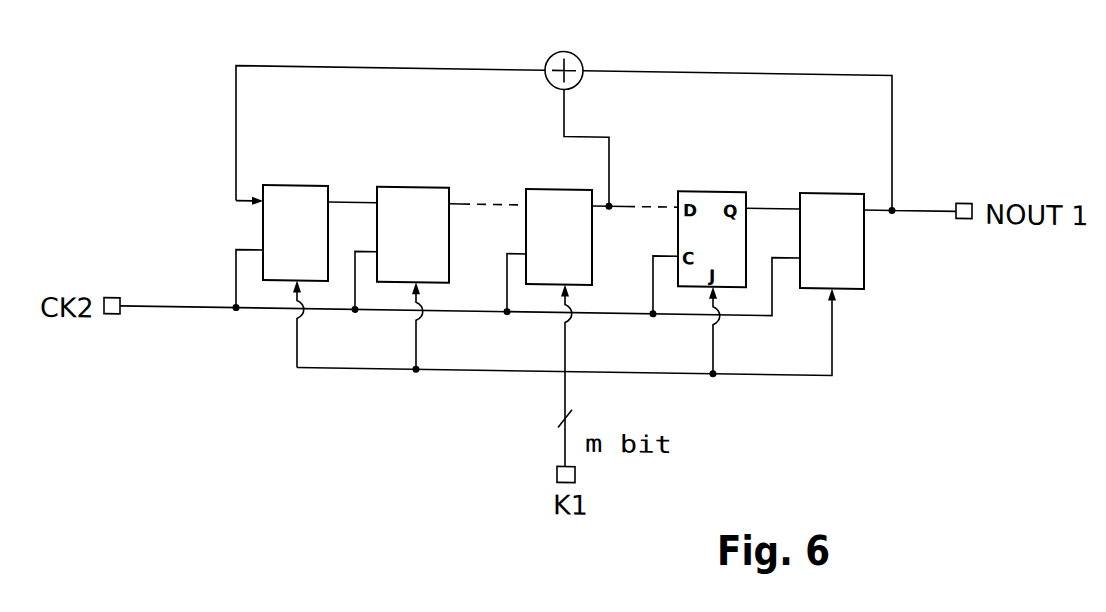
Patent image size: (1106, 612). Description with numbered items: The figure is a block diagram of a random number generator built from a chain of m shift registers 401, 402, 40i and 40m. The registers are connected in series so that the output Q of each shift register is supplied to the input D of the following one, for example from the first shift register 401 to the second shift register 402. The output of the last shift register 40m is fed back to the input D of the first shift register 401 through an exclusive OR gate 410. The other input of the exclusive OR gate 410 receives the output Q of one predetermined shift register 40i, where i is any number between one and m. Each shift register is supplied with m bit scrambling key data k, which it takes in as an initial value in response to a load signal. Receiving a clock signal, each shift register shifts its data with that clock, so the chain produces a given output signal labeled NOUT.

The shift register 401 is at (307, 185).
The shift register 402 is at (441, 183).
The predetermined shift register 40i is at (548, 185).
The shift register 40m is at (842, 185).
The exclusive OR gate 410 is at (577, 52).